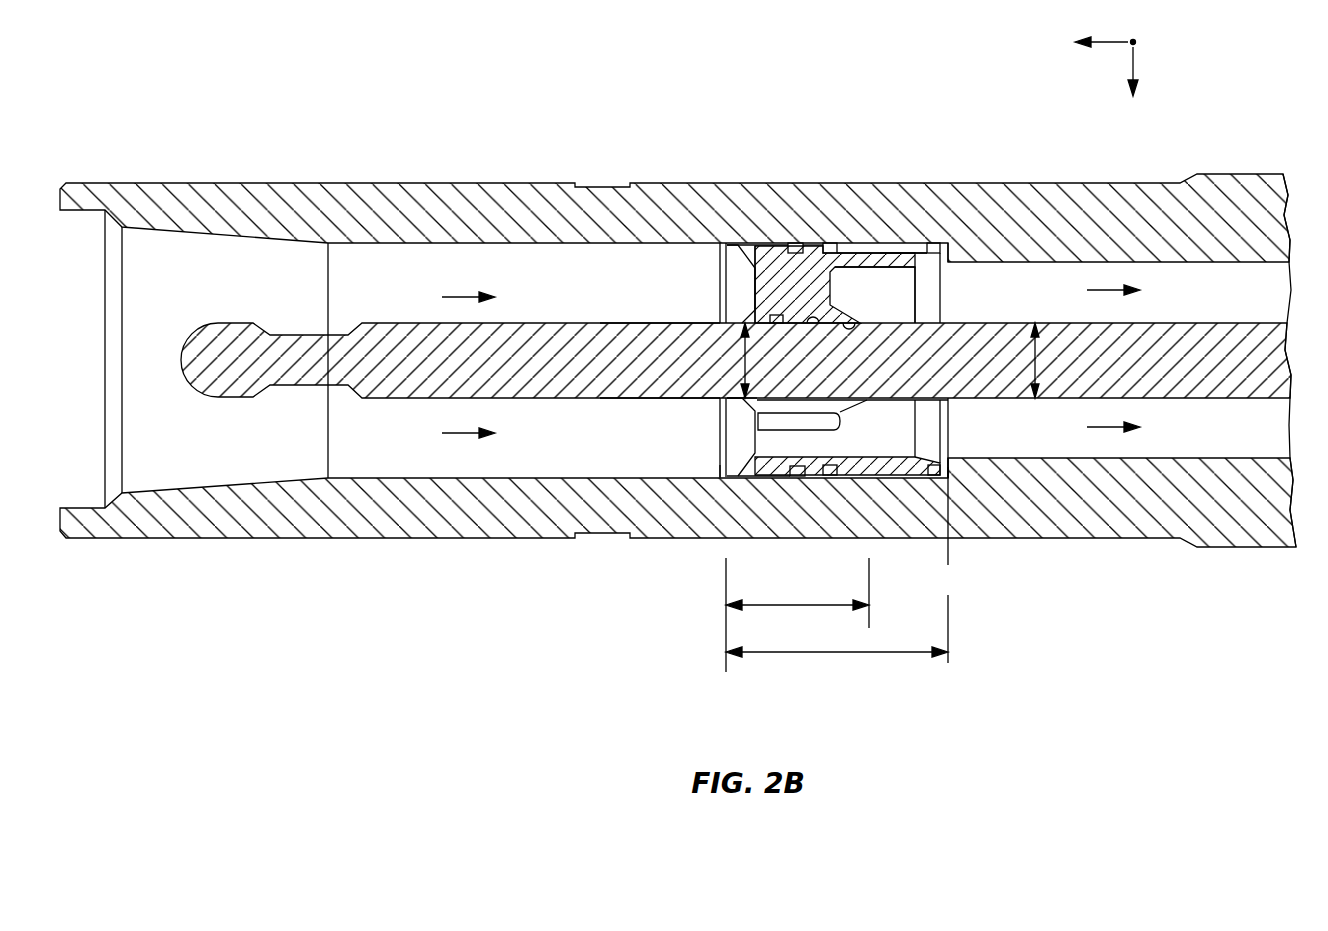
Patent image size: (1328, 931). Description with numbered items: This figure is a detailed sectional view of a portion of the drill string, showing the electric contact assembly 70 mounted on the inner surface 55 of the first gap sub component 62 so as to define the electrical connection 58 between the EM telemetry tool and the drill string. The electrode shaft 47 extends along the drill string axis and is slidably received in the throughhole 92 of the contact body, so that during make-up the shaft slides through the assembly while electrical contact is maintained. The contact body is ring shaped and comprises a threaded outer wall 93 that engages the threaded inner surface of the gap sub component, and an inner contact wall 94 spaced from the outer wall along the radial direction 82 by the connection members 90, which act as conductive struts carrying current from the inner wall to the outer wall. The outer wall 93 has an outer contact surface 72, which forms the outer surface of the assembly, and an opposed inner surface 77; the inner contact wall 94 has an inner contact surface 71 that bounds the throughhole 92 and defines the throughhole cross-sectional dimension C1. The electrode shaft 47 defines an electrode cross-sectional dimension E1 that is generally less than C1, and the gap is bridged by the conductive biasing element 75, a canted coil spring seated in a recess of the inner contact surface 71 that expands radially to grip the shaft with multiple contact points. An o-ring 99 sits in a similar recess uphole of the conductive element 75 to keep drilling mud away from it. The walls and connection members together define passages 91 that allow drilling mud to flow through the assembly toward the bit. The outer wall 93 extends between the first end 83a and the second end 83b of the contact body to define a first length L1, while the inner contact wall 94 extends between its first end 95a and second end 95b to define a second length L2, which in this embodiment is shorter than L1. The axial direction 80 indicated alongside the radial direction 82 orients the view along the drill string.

The inner surface 55 is at (418, 244).
The first gap sub component 62 is at (298, 503).
The shaft 47 is at (436, 375).
The throughhole 92 is at (700, 362).
The electric contact assembly 70 is at (710, 228).
The passage 91 is at (722, 283).
The o-ring 99 is at (750, 313).
The throughhole cross-sectional dimension C1 is at (744, 345).
The inner contact wall 94 is at (797, 315).
The conductive biasing element 75 is at (808, 315).
The electrical connection 58 is at (812, 250).
The connection member 90 is at (822, 247).
The outer contact surface 72 is at (852, 322).
The inner contact surface 71 is at (895, 285).
The inner surface 77 is at (912, 254).
The outer wall 93 is at (932, 252).
The first end 95a is at (745, 400).
The second end 95b is at (870, 398).
The first end 83a is at (720, 468).
The second end 83b is at (950, 437).
The electrode cross-sectional dimension E1 is at (1036, 356).
The first length L1 is at (837, 573).
The second length L2 is at (797, 615).
The axial direction 80 is at (1087, 42).
The radial direction 82 is at (1132, 89).